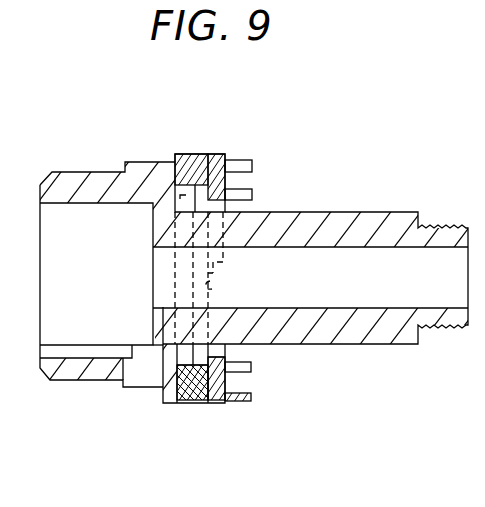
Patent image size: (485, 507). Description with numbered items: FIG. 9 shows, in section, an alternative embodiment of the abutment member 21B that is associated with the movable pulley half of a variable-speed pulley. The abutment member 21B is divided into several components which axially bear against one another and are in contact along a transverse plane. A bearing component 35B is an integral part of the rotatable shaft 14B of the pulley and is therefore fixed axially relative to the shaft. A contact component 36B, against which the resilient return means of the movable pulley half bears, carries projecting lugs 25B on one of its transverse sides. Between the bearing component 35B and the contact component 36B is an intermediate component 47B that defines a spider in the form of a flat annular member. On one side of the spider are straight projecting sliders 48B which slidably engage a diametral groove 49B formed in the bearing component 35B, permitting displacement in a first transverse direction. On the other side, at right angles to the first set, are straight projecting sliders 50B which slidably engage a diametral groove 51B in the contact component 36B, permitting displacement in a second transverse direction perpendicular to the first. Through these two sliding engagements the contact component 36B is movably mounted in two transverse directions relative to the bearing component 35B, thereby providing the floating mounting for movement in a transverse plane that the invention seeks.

The rotatable shaft 14B is at (389, 209).
The abutment member 21B is at (211, 412).
The projecting lugs 25B is at (252, 165).
The bearing component 35B is at (160, 149).
The contact component 36B is at (229, 149).
The intermediate component 47B is at (202, 149).
The projecting sliders 48B is at (183, 153).
The diametral groove 49B is at (180, 204).
The projecting sliders 50B is at (224, 262).
The diametral groove 51B is at (214, 289).